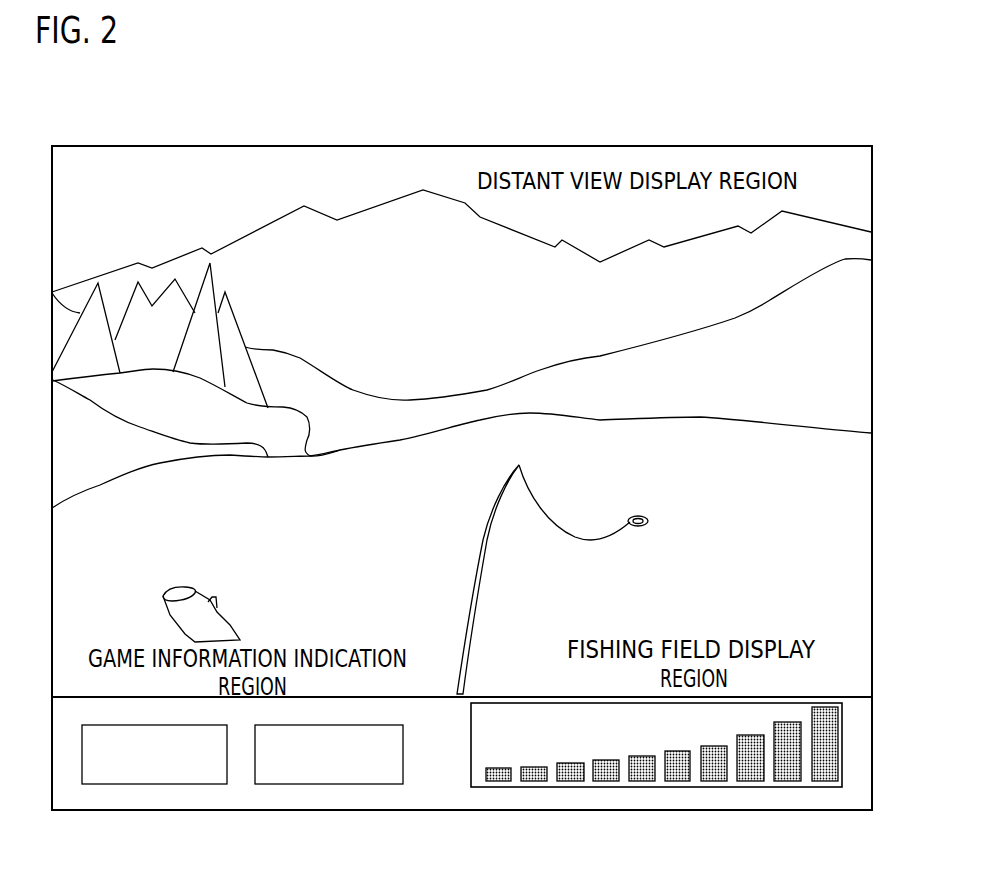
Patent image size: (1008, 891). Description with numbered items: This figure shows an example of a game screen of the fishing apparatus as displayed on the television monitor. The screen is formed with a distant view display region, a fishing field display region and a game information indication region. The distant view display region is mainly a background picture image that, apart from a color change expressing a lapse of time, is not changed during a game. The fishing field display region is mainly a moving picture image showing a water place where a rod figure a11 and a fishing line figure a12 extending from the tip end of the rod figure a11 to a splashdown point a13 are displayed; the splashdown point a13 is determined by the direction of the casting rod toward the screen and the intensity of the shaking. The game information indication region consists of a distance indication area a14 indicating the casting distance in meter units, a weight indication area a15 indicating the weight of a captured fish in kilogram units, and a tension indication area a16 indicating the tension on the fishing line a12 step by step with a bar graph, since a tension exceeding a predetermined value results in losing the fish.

The rod figure a11 is at (460, 636).
The fishing line figure a12 is at (575, 537).
The splashdown point a13 is at (641, 517).
The distance indication area a14 is at (168, 785).
The weight indication area a15 is at (327, 785).
The tension indication area a16 is at (665, 783).